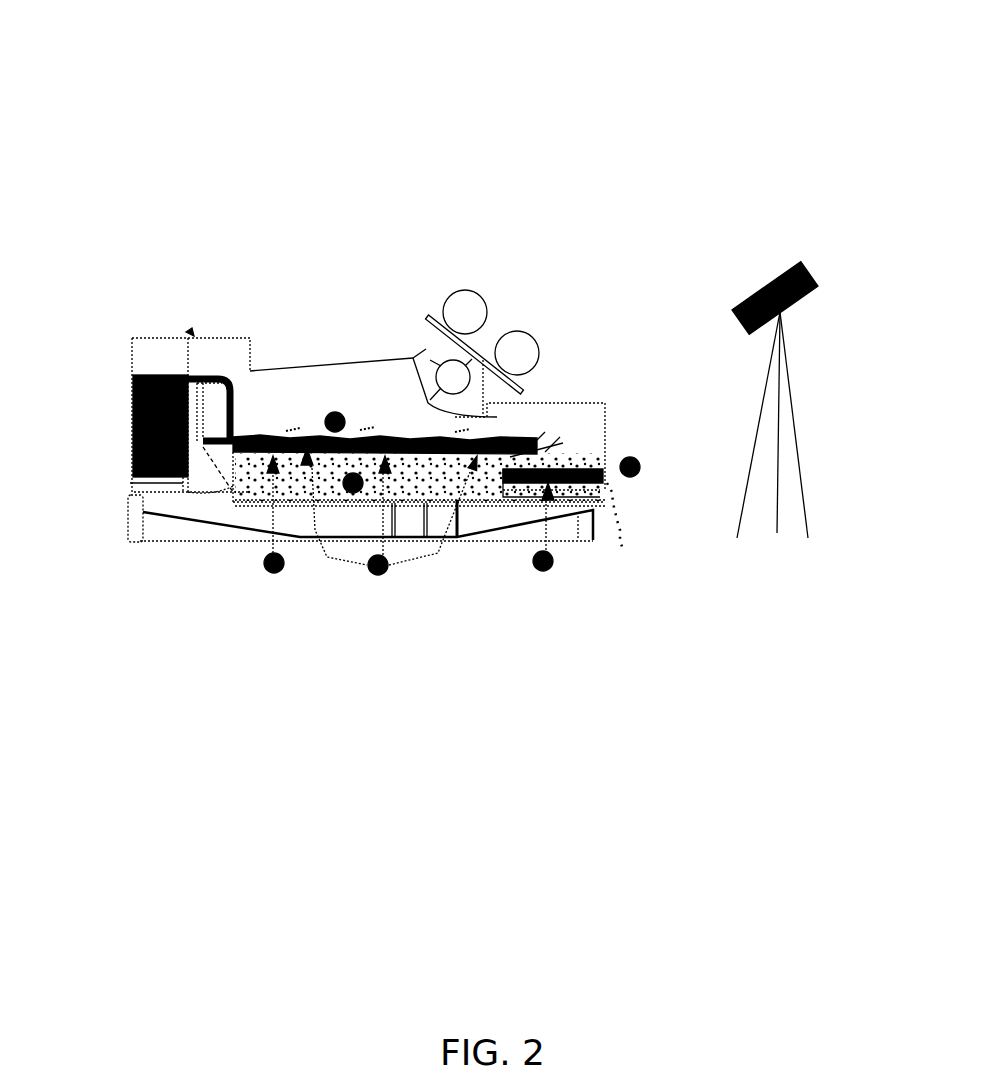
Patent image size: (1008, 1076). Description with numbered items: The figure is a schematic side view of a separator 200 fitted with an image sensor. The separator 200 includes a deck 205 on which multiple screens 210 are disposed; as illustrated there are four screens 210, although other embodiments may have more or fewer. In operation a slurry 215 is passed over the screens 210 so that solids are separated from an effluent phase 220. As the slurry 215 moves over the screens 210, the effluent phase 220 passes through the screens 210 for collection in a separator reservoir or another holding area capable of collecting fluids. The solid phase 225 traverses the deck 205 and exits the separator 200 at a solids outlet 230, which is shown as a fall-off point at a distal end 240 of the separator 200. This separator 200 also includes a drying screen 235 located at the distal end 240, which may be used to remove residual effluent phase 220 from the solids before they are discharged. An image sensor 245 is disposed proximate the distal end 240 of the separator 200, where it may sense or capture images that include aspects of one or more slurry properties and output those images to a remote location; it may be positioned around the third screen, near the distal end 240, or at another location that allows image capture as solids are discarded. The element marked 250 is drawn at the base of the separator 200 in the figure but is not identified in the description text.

The system 200 is at (227, 127).
The conveyor bed 205 is at (237, 453).
The particles 210 is at (345, 488).
The feed pipe 215 is at (278, 443).
The separation region 220 is at (250, 483).
The discharged particles 225 is at (615, 538).
The discharge chute 230 is at (597, 478).
The discharge belt 235 is at (570, 472).
The chamber 240 is at (630, 405).
The camera 245 is at (810, 277).
The base 250 is at (125, 492).